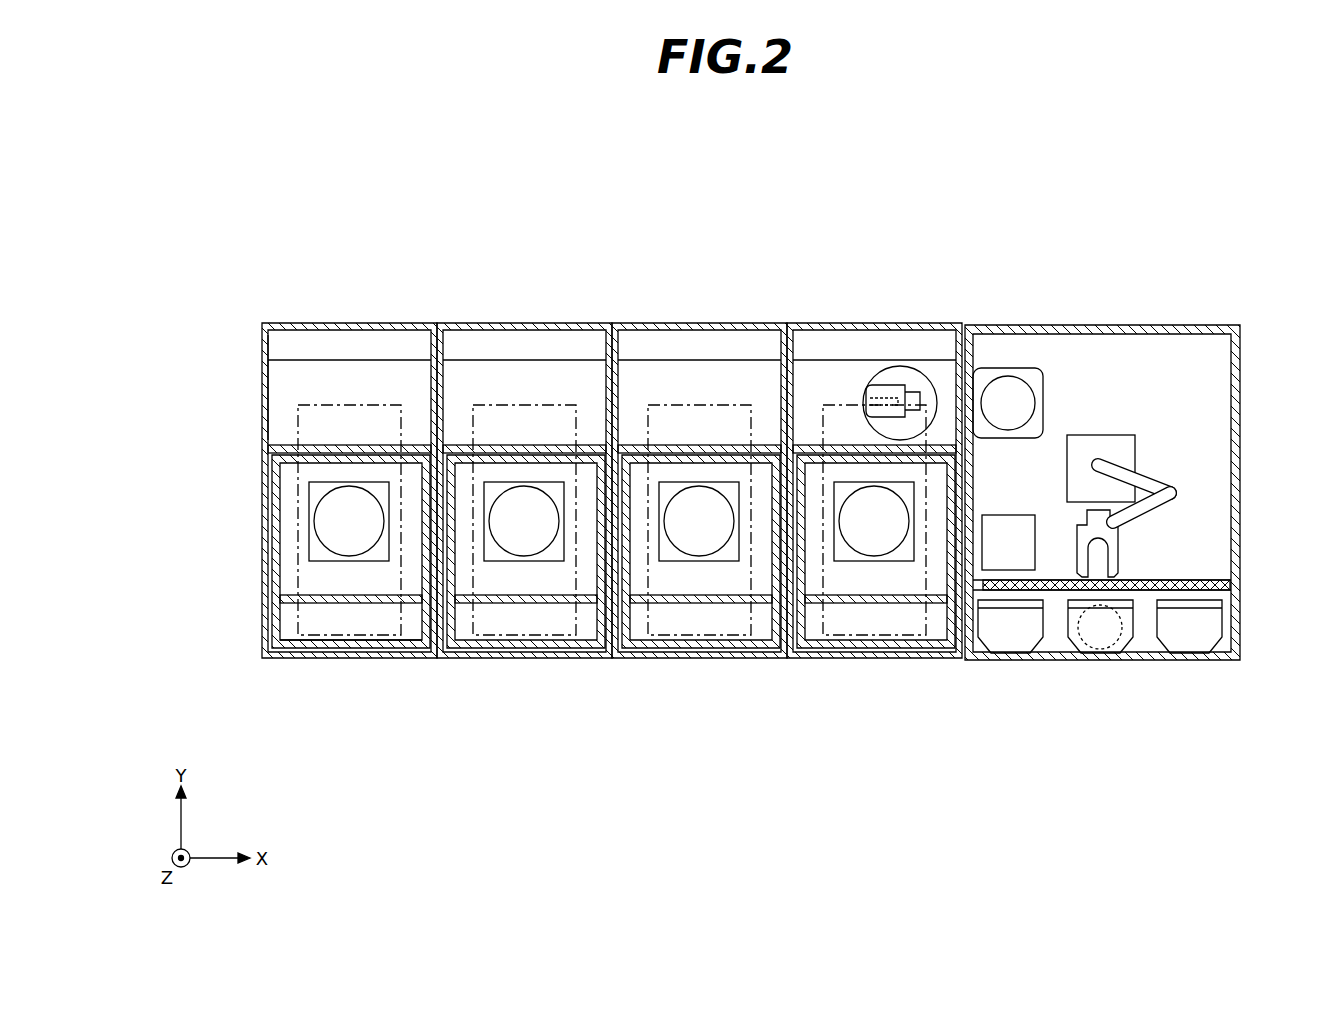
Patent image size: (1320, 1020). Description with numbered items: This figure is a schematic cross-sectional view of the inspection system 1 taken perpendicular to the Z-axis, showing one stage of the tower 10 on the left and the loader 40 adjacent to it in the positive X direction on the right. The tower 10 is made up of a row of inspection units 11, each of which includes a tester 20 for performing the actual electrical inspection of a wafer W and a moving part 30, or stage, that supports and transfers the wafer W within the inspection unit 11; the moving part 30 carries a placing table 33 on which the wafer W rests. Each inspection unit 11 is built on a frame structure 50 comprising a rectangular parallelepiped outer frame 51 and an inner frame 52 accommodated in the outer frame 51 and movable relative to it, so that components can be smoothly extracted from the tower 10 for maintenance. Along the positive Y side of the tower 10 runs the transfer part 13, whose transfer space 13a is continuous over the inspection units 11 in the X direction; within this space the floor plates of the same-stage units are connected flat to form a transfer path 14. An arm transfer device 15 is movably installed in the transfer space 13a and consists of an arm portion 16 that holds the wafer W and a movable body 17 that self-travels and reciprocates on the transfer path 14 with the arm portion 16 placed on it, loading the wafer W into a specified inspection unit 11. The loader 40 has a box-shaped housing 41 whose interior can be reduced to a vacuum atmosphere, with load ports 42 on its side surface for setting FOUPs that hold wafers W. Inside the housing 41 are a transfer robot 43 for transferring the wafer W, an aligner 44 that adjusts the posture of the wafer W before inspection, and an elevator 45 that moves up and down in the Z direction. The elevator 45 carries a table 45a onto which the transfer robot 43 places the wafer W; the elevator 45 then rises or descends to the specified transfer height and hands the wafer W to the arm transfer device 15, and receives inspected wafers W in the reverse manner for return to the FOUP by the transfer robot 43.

The inspection system 1 is at (338, 158).
The tower 10 is at (962, 312).
The inspection unit 11 is at (398, 660).
The transfer part 13 is at (256, 325).
The transfer space 13a is at (283, 413).
The transfer path 14 is at (645, 420).
The arm transfer device 15 is at (942, 375).
The arm portion 16 is at (924, 402).
The movable body 17 is at (926, 436).
The tester 20 is at (345, 636).
The moving part 30 is at (308, 510).
The placing table 33 is at (322, 545).
The loader 40 is at (968, 316).
The housing 41 is at (1240, 470).
The load port 42 is at (1057, 652).
The transfer robot 43 is at (1176, 505).
The aligner 44 is at (1005, 546).
The elevator 45 is at (1043, 387).
The table 45a is at (1043, 414).
The frame structure 50 is at (193, 573).
The outer frame 51 is at (262, 583).
The inner frame 52 is at (262, 612).
The wafer W is at (1100, 650).